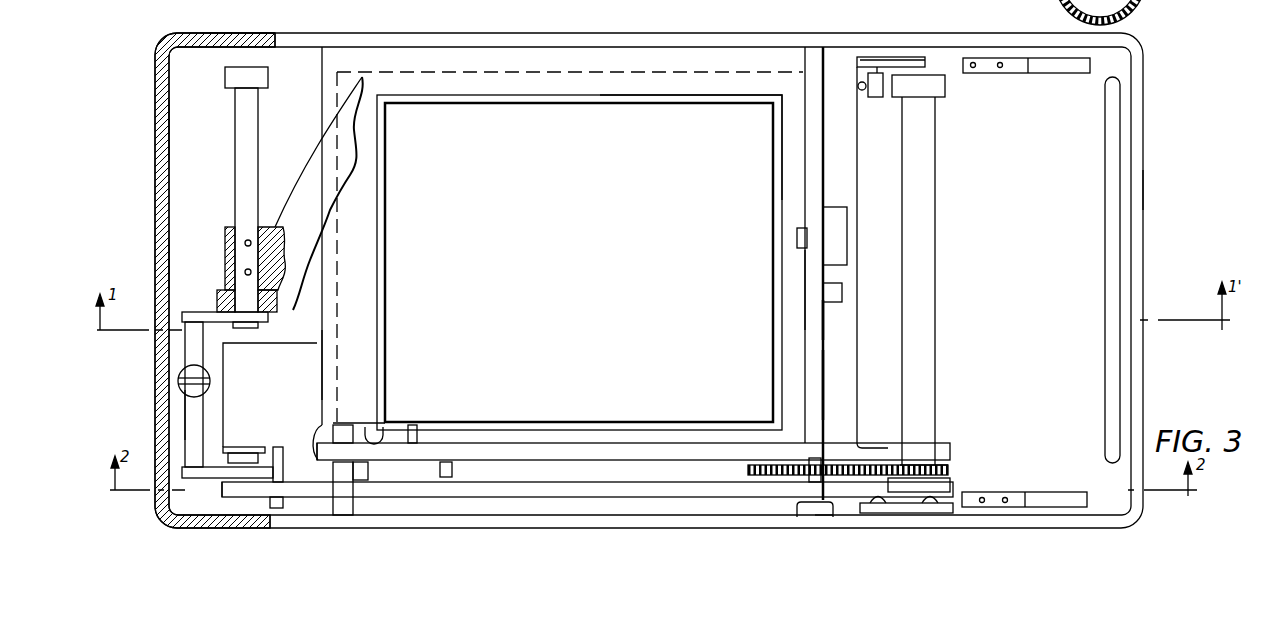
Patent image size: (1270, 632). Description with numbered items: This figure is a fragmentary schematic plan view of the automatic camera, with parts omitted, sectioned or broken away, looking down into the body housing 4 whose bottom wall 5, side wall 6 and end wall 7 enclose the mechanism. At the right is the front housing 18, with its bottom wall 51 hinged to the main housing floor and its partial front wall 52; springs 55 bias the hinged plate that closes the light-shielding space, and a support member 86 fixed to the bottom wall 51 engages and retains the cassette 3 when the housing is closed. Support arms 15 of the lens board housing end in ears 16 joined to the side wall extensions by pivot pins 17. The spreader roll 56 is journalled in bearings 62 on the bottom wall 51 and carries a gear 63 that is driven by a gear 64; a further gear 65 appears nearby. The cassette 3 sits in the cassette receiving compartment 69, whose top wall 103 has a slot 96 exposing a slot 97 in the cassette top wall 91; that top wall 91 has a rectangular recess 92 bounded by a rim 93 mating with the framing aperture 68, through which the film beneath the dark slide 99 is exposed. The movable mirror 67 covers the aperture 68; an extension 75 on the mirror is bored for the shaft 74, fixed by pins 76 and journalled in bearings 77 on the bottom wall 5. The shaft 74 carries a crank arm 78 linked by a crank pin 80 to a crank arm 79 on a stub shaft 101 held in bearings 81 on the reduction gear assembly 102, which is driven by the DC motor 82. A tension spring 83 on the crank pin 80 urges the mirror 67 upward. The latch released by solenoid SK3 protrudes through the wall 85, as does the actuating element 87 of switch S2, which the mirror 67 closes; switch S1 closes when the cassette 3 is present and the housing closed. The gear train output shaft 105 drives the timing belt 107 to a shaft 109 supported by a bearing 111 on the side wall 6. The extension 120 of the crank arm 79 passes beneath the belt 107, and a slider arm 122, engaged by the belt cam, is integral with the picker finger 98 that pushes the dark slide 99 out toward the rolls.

The cassette 3 is at (844, 333).
The body housing 4 is at (291, 17).
The bottom wall 5 is at (185, 130).
The side wall 6 is at (563, 41).
The end wall 7 is at (160, 262).
The support arm 15 is at (903, 60).
The ear 16 is at (870, 56).
The pivot pin 17 is at (868, 76).
The front housing 18 is at (1086, 150).
The bottom wall 51 is at (1026, 300).
The partial front wall 52 is at (1138, 189).
The spring 55 is at (1053, 72).
The spreader roll 56 is at (935, 345).
The bearing 62 is at (945, 86).
The gear 63 is at (948, 468).
The gear 64 is at (770, 478).
The gear 65 is at (1080, 14).
The movable mirror 67 is at (340, 172).
The framing aperture 68 is at (600, 97).
The cassette receiving compartment 69 is at (827, 372).
The shaft 74 is at (258, 146).
The extension 75 is at (225, 242).
The pin 76 is at (262, 217).
The bearing 77 is at (226, 76).
The crank arm 78 is at (223, 323).
The crank arm 79 is at (195, 480).
The crank pin 80 is at (195, 410).
The bearing 81 is at (265, 455).
The DC motor 82 is at (270, 395).
The tension spring 83 is at (180, 378).
The wall 85 is at (805, 152).
The support member 86 is at (905, 290).
The actuating element 87 is at (805, 290).
The top wall 91 is at (372, 362).
The rectangular recess 92 is at (516, 102).
The rim 93 is at (476, 100).
The slot 96 is at (383, 430).
The slot 97 is at (405, 430).
The picker finger 98 is at (340, 425).
The dark slide 99 is at (638, 190).
The stub shaft 101 is at (240, 447).
The reduction gear assembly 102 is at (333, 475).
The top wall 103 is at (745, 86).
The output shaft 105 is at (284, 458).
The timing belt 107 is at (615, 497).
The shaft 109 is at (818, 506).
The bearing 111 is at (825, 514).
The extension 120 is at (252, 497).
The slider arm 122 is at (343, 500).
The switch S1 is at (879, 72).
The switch S2 is at (842, 288).
The solenoid SK3 is at (843, 230).